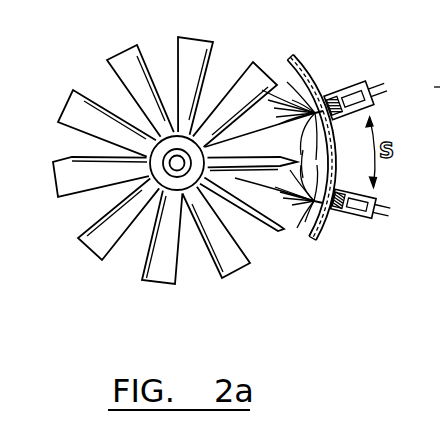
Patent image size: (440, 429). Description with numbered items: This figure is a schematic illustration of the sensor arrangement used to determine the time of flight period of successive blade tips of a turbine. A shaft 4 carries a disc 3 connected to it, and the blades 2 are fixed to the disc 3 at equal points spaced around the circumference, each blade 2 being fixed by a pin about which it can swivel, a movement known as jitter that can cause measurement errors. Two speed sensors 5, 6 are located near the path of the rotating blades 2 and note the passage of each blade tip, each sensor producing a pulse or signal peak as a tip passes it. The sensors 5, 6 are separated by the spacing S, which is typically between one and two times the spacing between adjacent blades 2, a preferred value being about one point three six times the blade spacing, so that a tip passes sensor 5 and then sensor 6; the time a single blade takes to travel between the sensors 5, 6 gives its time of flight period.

The blade 2 is at (72, 112).
The disc 3 is at (163, 176).
The shaft 4 is at (176, 172).
The speed sensor 5 is at (328, 88).
The speed sensor 6 is at (338, 233).